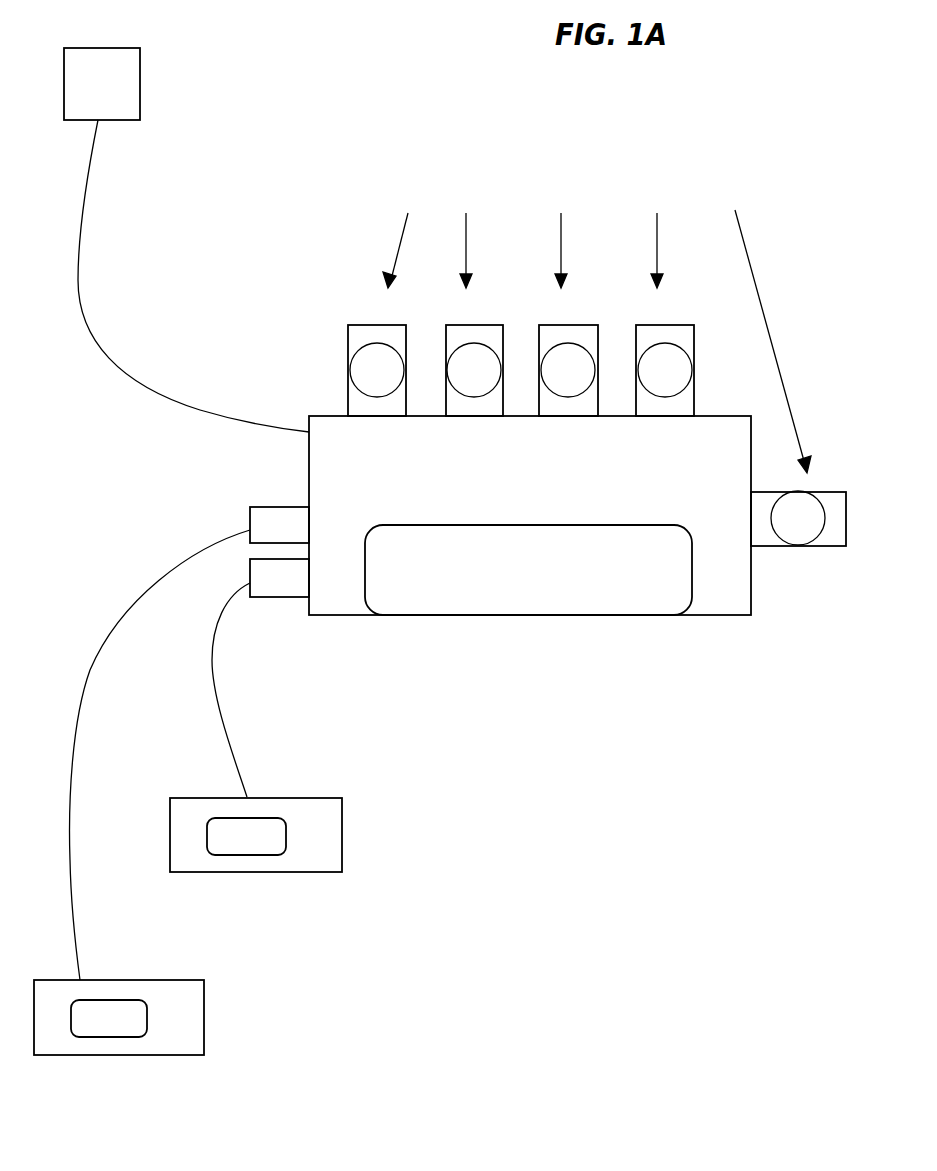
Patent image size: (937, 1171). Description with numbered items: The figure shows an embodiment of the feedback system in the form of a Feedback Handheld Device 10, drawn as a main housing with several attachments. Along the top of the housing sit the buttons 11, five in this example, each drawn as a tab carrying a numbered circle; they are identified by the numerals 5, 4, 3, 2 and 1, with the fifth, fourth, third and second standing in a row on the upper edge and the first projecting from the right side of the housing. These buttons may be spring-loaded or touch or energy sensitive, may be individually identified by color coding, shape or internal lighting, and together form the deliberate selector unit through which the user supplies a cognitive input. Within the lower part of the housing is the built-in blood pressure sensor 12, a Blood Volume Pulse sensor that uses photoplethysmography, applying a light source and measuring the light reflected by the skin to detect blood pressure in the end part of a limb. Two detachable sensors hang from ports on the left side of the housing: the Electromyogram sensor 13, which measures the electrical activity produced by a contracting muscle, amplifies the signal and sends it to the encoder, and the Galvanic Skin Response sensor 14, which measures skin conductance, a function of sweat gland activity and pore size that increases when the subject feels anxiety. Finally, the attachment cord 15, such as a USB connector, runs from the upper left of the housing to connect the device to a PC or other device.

The sensor module position 1 is at (798, 518).
The sensor module position 2 is at (665, 370).
The sensor module position 3 is at (568, 370).
The sensor module position 4 is at (474, 370).
The sensor module position 5 is at (377, 370).
The Feedback Handheld Device 10 is at (432, 133).
The buttons 11 is at (530, 180).
The blood pressure sensor 12 is at (542, 583).
The Electromyogram sensor 13 is at (204, 1012).
The Galvanic Skin Response sensor 14 is at (342, 830).
The attachment cord 15 is at (140, 78).